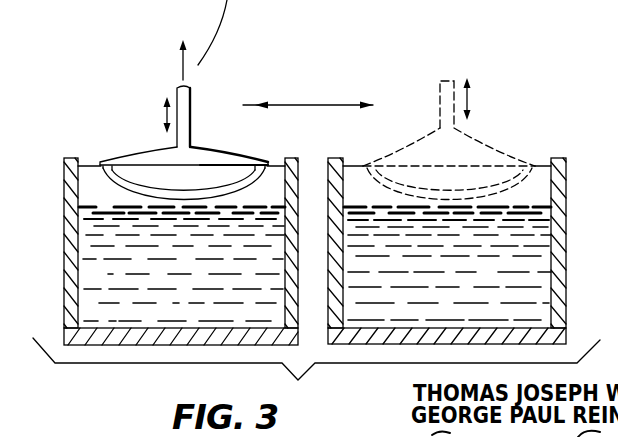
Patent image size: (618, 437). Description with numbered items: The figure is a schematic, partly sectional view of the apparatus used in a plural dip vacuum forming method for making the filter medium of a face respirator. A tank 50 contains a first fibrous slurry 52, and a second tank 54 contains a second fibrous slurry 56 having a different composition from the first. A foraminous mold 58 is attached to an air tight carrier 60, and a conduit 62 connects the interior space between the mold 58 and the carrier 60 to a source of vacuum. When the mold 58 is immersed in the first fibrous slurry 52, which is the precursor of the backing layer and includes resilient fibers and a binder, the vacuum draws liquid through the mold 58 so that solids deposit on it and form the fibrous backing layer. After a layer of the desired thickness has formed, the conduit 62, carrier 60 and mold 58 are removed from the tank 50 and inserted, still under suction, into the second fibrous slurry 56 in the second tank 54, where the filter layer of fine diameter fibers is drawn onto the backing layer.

The tank 50 is at (67, 192).
The first fibrous slurry 52 is at (93, 268).
The second tank 54 is at (560, 222).
The second fibrous slurry 56 is at (538, 280).
The foraminous mold 58 is at (132, 185).
The air tight carrier 60 is at (223, 148).
The conduit 62 is at (190, 125).